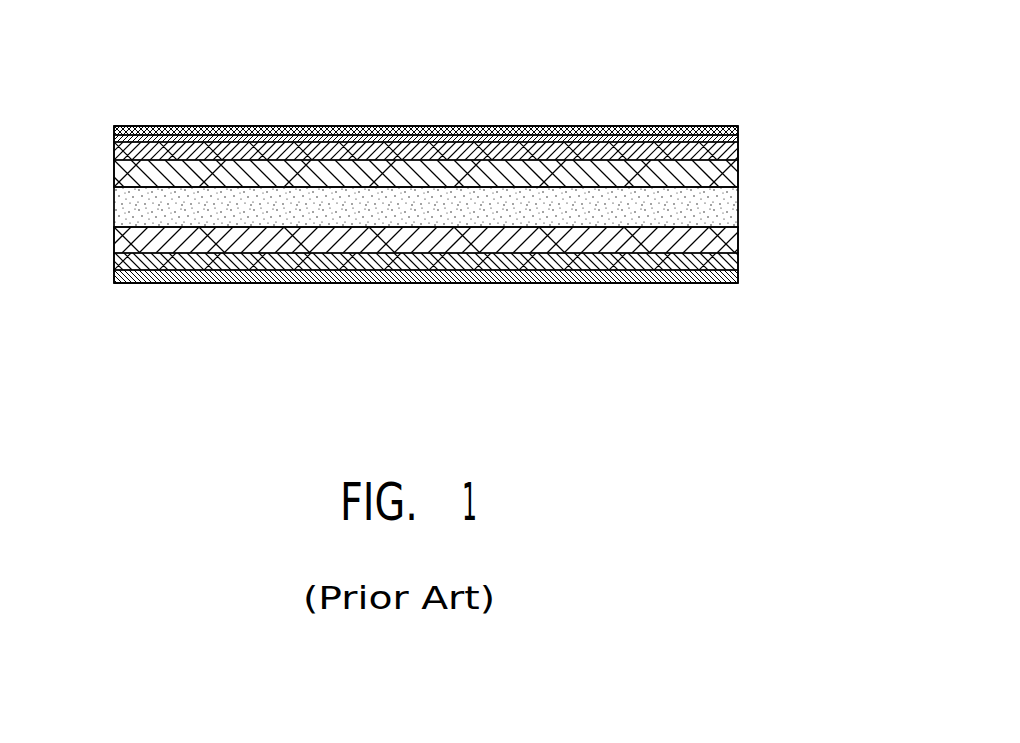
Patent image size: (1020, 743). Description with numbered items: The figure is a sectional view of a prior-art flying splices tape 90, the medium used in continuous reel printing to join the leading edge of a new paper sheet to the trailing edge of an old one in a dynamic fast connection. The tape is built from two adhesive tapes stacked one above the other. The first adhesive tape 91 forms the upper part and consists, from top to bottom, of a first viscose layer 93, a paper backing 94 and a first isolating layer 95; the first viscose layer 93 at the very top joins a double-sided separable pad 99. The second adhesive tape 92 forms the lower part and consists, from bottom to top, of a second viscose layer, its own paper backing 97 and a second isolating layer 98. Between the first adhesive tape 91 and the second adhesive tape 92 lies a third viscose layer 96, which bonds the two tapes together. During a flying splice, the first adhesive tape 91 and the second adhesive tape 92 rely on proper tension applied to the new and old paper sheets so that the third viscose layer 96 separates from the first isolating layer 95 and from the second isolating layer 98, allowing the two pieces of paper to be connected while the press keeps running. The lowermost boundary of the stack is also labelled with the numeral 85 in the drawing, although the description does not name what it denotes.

The prior art display panel stack 90 is at (694, 109).
The top surface / viewing side 99 is at (738, 127).
The upper polarizer assembly 91 is at (105, 140).
The lower polarizer assembly 92 is at (105, 228).
The surface treatment layer 93 is at (738, 133).
The upper protective film 94 is at (730, 150).
The upper polarizing film 95 is at (732, 172).
The liquid crystal cell / substrate 96 is at (718, 207).
The lower polarizing film 98 is at (735, 240).
The lower protective film 97 is at (738, 268).
The bottom surface / backlight side 85 is at (718, 284).